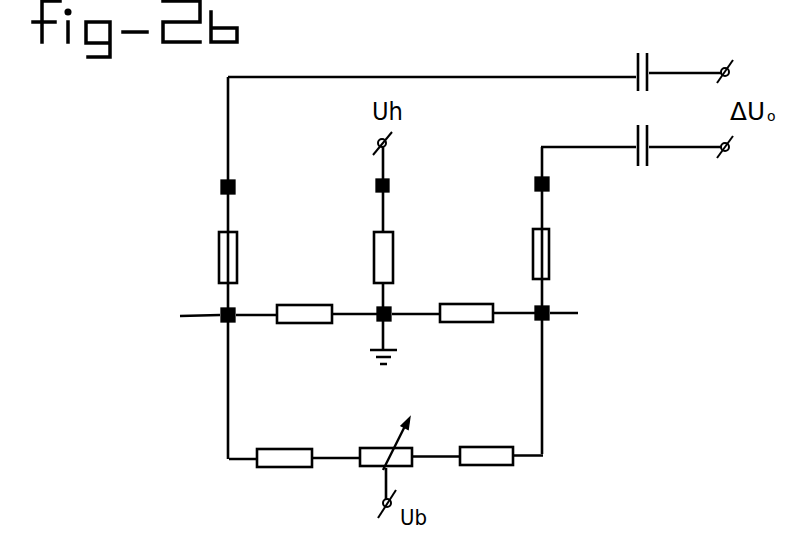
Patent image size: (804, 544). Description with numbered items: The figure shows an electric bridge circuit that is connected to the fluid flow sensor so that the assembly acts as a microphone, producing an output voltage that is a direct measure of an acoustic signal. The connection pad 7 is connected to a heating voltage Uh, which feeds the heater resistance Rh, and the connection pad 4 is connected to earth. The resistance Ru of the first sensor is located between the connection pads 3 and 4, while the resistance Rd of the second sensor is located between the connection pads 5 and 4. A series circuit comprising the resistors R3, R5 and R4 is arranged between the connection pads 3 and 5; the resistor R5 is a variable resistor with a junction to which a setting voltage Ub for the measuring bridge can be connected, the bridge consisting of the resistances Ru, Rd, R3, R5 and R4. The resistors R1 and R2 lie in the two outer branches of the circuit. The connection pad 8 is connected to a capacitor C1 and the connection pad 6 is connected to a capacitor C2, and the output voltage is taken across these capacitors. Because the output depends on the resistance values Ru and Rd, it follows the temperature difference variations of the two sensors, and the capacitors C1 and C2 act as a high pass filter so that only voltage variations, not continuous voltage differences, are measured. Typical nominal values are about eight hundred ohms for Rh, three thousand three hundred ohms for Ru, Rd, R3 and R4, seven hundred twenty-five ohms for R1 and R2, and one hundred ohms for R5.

The connection pad 3 is at (220, 315).
The connection pad 4 is at (378, 309).
The connection pad 5 is at (551, 313).
The connection pad 6 is at (549, 184).
The connection pad 7 is at (389, 185).
The connection pad 8 is at (236, 187).
The capacitor C1 is at (646, 54).
The capacitor C2 is at (648, 164).
The resistor R1 is at (233, 262).
The resistor R2 is at (544, 258).
The heater resistance Rh is at (388, 262).
The resistance of sensor S1 Ru is at (310, 312).
The resistance of sensor S2 Rd is at (468, 312).
The resistor R3 is at (281, 462).
The resistor R4 is at (484, 460).
The variable resistor R5 is at (373, 462).